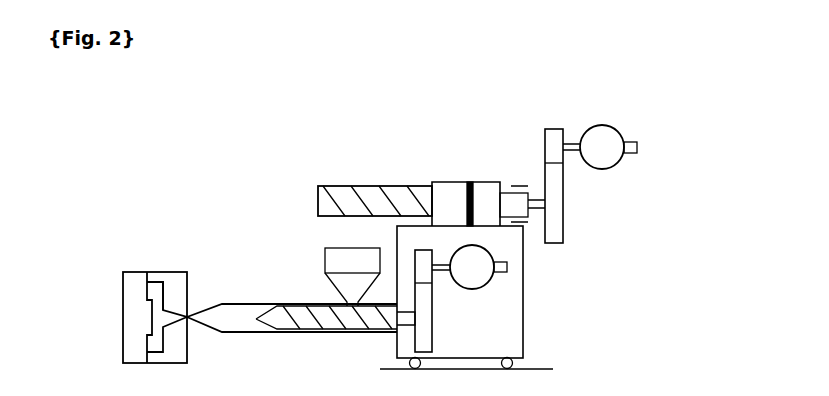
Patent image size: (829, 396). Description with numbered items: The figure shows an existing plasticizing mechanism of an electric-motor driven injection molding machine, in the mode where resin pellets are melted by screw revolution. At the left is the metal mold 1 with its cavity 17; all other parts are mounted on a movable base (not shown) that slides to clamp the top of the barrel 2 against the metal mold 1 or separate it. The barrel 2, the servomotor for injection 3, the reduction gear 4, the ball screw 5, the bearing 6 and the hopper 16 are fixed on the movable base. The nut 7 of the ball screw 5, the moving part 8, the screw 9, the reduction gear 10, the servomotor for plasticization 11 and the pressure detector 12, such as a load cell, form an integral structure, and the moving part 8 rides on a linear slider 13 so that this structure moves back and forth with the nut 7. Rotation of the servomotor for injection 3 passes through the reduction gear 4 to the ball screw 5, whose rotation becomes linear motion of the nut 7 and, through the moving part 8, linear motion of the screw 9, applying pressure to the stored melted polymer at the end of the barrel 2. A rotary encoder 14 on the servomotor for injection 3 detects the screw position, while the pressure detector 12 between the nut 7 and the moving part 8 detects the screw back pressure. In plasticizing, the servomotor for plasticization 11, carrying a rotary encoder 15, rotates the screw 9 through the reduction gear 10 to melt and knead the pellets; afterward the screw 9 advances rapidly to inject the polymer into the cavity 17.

The metal mold 1 is at (188, 353).
The barrel 2 is at (238, 303).
The servomotor for injection 3 is at (602, 122).
The reduction gear 4 is at (563, 204).
The ball screw 5 is at (353, 192).
The bearing 6 is at (520, 186).
The nut 7 is at (494, 182).
The moving part 8 is at (523, 301).
The screw 9 is at (364, 318).
The reduction gear 10 is at (432, 347).
The servomotor for plasticization 11 is at (472, 289).
The pressure detector 12 is at (470, 182).
The linear slider 13 is at (558, 368).
The rotary encoder 14 is at (637, 147).
The rotary encoder 15 is at (507, 266).
The hopper 16 is at (325, 265).
The cavity 17 is at (155, 290).